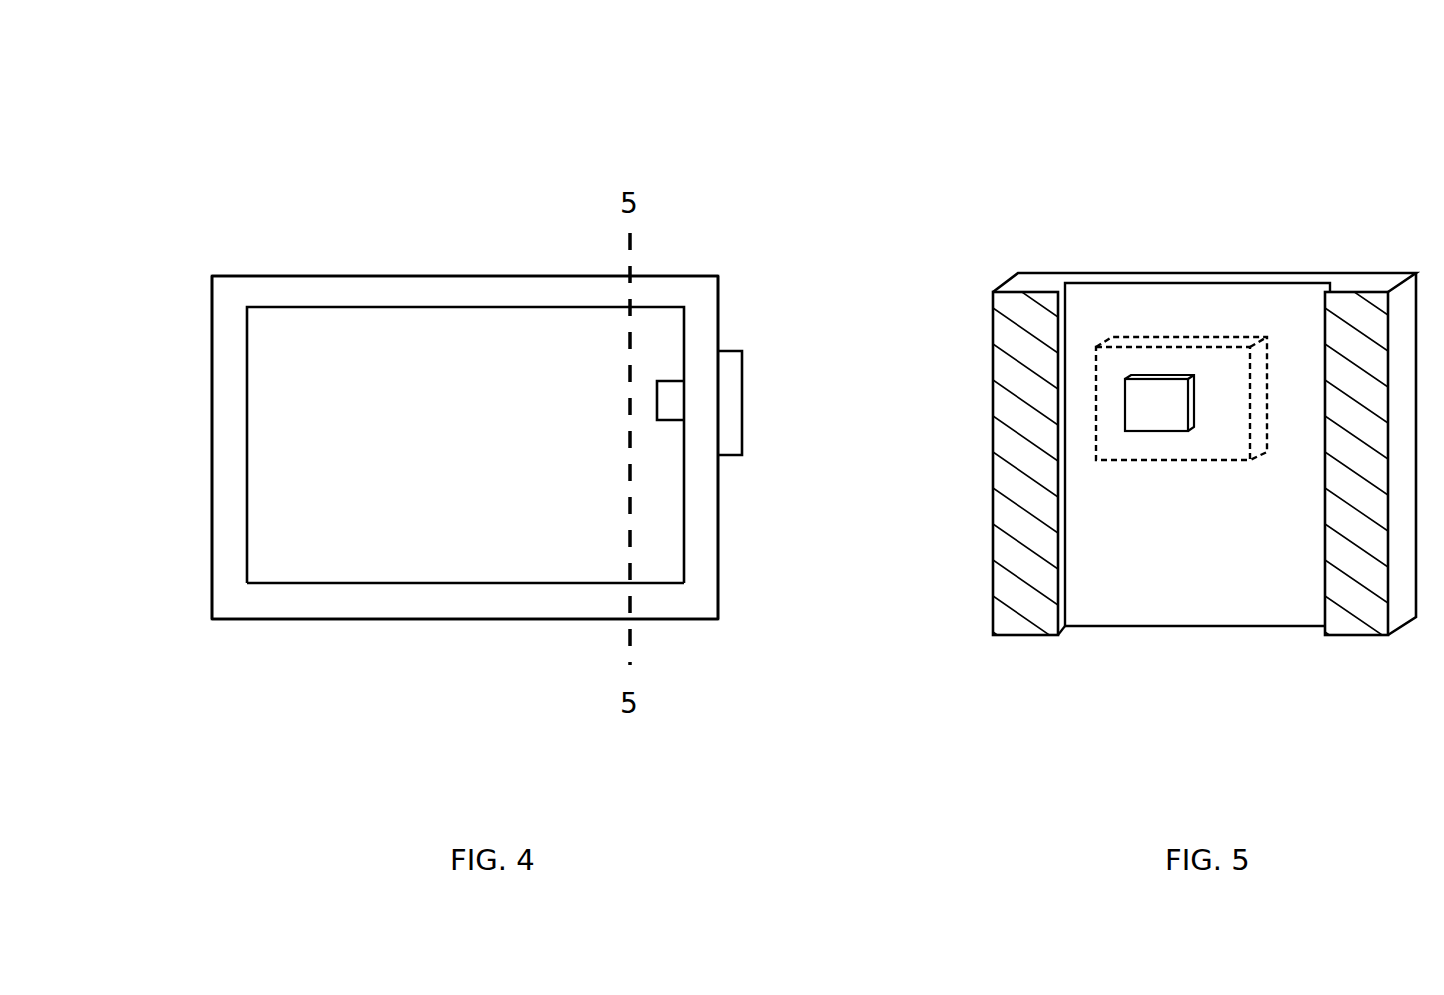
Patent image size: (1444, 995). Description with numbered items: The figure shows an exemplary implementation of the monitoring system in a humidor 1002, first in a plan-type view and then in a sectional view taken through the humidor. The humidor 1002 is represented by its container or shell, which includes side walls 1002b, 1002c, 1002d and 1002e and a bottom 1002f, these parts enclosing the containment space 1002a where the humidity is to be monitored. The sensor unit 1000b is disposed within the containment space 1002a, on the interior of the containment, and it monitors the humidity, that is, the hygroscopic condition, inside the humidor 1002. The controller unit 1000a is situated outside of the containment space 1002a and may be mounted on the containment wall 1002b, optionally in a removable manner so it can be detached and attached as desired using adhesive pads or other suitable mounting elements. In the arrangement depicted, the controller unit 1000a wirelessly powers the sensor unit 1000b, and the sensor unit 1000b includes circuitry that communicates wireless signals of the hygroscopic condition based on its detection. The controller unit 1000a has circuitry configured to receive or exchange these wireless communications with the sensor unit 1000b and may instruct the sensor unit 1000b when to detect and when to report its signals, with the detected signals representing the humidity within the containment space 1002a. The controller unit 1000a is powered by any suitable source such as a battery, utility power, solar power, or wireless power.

In FIG. 4, the humidor 1002 is at (480, 252).
In FIG. 5, the humidor 1002 is at (1032, 275).
In FIG. 4, the containment space 1002a is at (491, 410).
In FIG. 4, the side wall 1002b is at (720, 577).
In FIG. 5, the side wall 1002b is at (1220, 588).
In FIG. 4, the side wall 1002c is at (212, 413).
In FIG. 4, the side wall 1002d is at (317, 620).
In FIG. 4, the side wall 1002e is at (355, 276).
In FIG. 4, the bottom 1002f is at (303, 523).
In FIG. 4, the controller unit 1000a is at (732, 422).
In FIG. 5, the controller unit 1000a is at (1225, 470).
In FIG. 4, the sensor unit 1000b is at (674, 388).
In FIG. 5, the sensor unit 1000b is at (1150, 379).